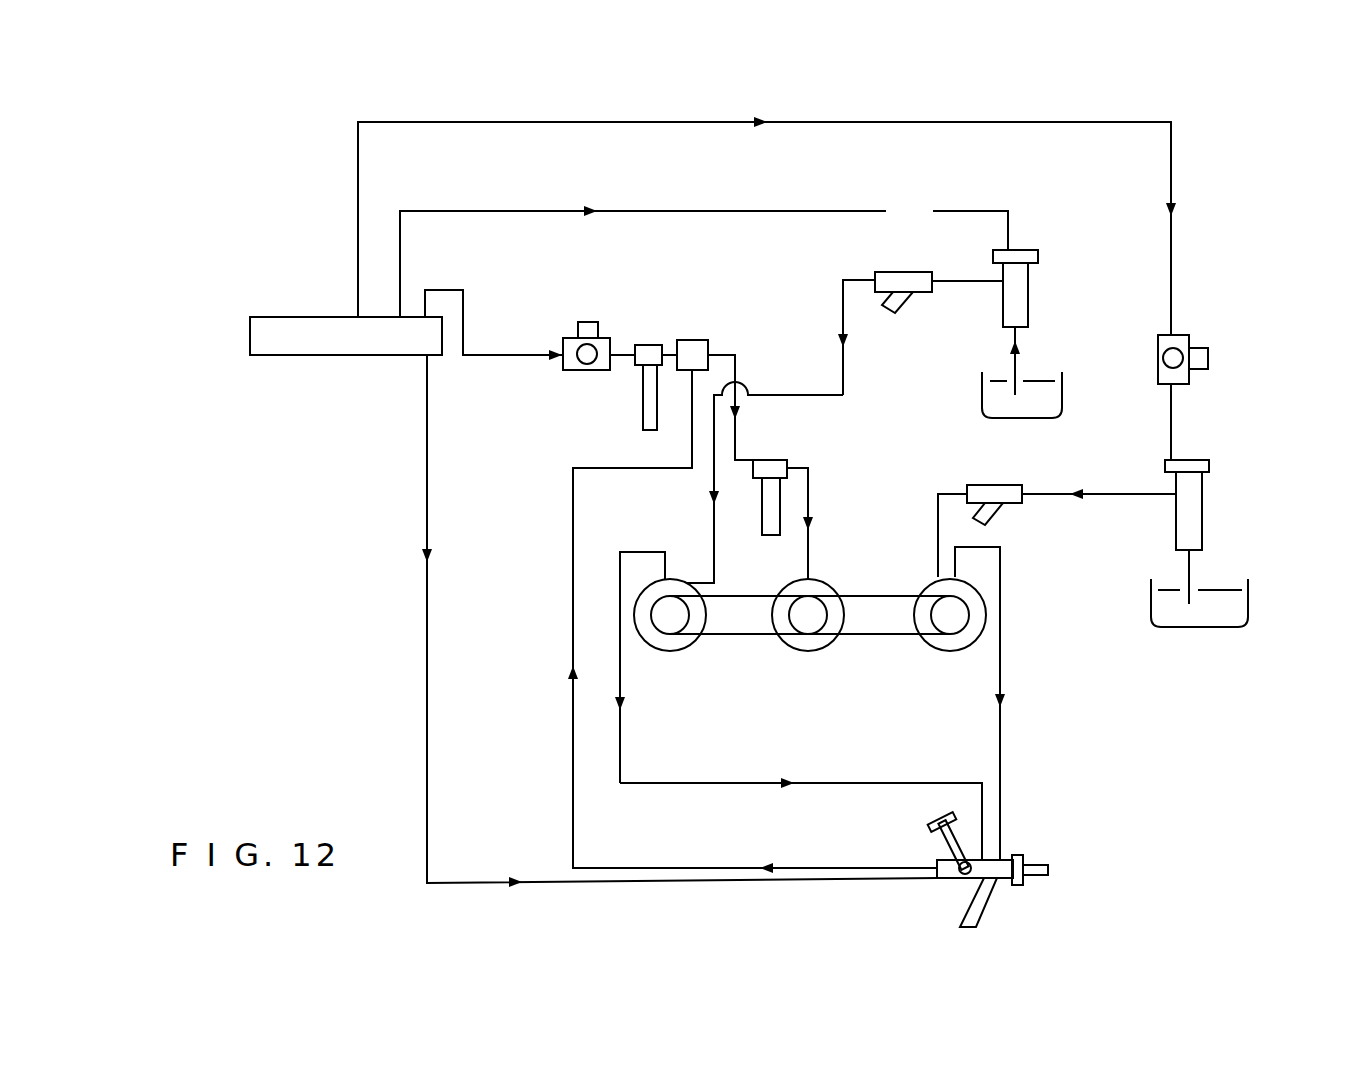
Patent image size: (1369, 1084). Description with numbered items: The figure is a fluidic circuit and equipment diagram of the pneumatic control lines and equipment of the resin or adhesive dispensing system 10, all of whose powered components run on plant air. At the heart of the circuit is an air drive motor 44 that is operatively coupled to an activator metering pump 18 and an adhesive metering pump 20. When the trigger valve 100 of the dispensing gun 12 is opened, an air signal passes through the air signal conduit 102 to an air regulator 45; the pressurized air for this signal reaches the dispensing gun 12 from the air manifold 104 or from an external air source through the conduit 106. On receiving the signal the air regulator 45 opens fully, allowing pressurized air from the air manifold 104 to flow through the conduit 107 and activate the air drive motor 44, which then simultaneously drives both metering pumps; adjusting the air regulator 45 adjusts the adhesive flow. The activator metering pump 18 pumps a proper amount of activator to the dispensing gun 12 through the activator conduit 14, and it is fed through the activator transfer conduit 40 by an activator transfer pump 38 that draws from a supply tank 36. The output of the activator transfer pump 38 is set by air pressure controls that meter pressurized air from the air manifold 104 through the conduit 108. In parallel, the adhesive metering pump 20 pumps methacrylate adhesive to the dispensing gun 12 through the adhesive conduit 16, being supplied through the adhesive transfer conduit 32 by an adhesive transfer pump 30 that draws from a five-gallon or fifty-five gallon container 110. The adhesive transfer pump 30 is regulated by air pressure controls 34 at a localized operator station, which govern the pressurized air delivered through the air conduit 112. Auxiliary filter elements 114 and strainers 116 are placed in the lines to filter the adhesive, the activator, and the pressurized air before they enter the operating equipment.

The resin or adhesive dispensing system 10 is at (1143, 748).
The dispensing gun 12 is at (1020, 855).
The activator conduit 14 is at (801, 809).
The adhesive conduit 16 is at (993, 703).
The activator metering pump 18 is at (690, 645).
The adhesive metering pump 20 is at (955, 652).
The adhesive transfer pump 30 is at (1202, 500).
The adhesive transfer conduit 32 is at (1099, 484).
The air pressure controls 34 is at (1190, 345).
The supply tank 36 is at (1010, 420).
The activator transfer pump 38 is at (1030, 268).
The activator transfer conduit 40 is at (843, 337).
The air drive motor 44 is at (803, 650).
The air regulator 45 is at (708, 340).
The trigger valve 100 is at (928, 822).
The air signal conduit 102 is at (752, 621).
The air manifold 104 is at (265, 358).
The conduit 106 is at (659, 621).
The conduit 107 is at (819, 524).
The conduit 108 is at (704, 251).
The container 110 is at (1248, 600).
The air conduit 112 is at (767, 278).
The filter elements 114 is at (655, 345).
The strainers 116 is at (913, 292).